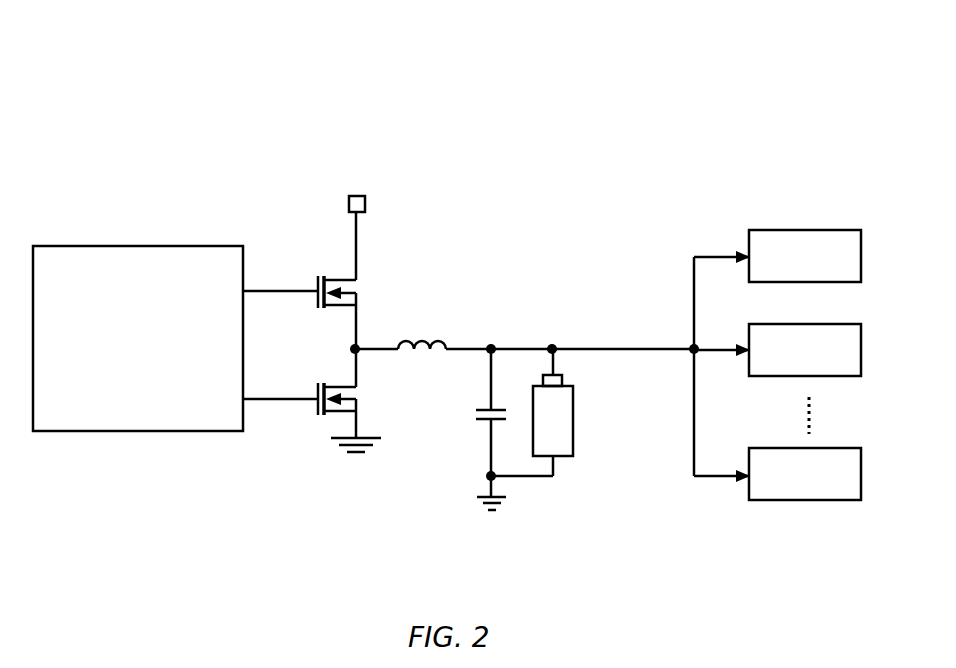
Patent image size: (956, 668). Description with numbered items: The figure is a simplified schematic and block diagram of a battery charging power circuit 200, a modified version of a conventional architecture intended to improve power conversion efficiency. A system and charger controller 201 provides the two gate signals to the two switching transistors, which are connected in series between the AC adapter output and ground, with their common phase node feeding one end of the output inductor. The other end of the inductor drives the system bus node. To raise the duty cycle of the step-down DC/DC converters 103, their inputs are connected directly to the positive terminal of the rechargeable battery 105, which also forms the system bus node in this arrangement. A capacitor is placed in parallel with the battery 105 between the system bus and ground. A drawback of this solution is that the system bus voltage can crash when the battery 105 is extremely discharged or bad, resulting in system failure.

The battery charging power circuit 200 is at (300, 97).
The system and charger controller 201 is at (138, 338).
The step-down DC/DC converters 103 is at (783, 214).
The rechargeable battery 105 is at (568, 445).